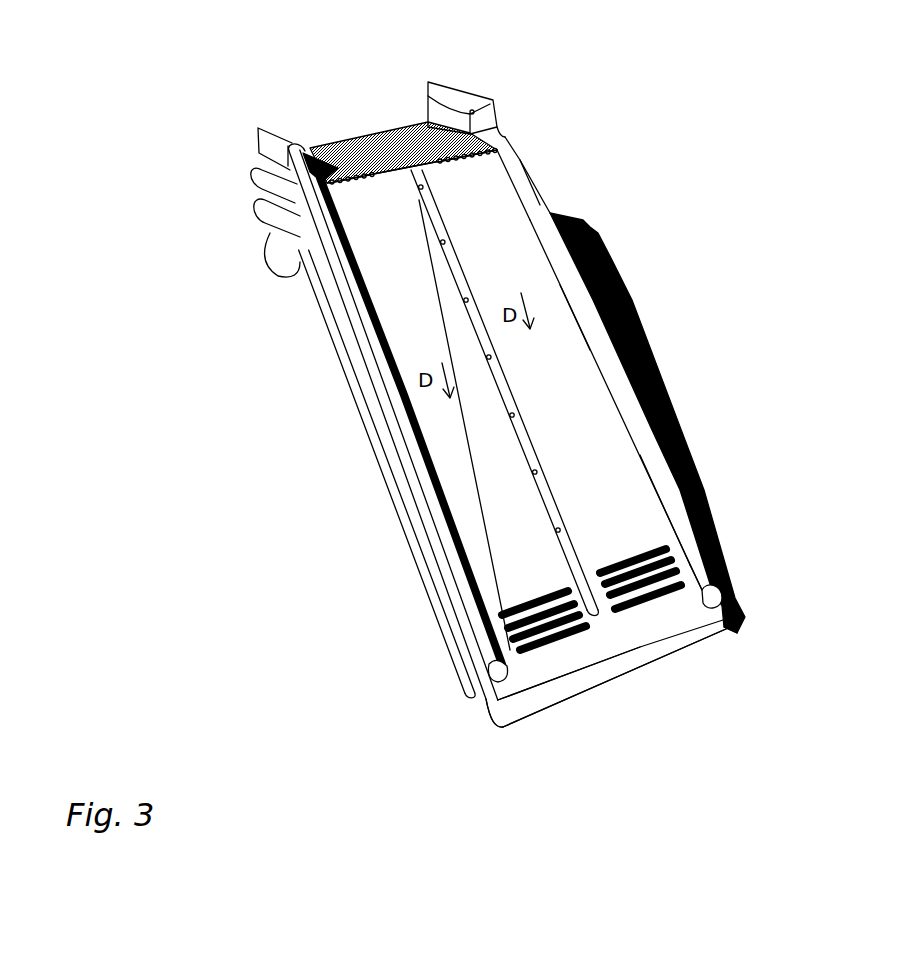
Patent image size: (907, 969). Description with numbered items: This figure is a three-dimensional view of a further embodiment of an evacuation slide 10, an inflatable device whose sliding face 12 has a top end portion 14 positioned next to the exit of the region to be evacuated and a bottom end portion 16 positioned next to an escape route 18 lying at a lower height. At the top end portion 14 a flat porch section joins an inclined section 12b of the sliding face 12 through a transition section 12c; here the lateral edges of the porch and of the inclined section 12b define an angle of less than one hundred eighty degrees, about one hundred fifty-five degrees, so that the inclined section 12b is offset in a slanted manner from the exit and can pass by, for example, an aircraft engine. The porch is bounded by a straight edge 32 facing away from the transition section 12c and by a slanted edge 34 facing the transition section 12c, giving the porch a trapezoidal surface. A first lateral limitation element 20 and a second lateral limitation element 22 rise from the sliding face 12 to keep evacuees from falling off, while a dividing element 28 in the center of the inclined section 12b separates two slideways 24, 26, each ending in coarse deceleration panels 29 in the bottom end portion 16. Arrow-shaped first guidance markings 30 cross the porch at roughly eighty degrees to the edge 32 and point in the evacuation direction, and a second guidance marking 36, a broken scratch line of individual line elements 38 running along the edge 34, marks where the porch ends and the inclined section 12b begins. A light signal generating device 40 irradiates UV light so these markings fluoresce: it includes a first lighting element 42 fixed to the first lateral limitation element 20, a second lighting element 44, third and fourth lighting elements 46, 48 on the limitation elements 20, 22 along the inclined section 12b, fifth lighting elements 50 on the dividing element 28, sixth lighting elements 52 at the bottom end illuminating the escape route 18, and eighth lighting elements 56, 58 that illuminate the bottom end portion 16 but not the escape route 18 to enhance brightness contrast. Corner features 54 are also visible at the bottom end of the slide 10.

The evacuation slide 10 is at (741, 267).
The sliding face 12 is at (503, 113).
The inclined section 12b is at (493, 213).
The transition section 12c is at (500, 150).
The top end portion 14 is at (515, 128).
The bottom end portion 16 is at (748, 590).
The escape route 18 is at (628, 716).
The first lateral limitation element 20 is at (427, 492).
The second lateral limitation element 22 is at (653, 456).
The slideway 24 is at (497, 545).
The slideway 26 is at (632, 512).
The dividing element 28 is at (500, 377).
The deceleration panels 29 is at (525, 598).
The first guidance markings 30 is at (347, 165).
The edge 32 is at (385, 132).
The edge 34 is at (403, 172).
The second guidance marking 36 is at (357, 185).
The line elements 38 is at (455, 165).
The light signal generating device 40 is at (535, 166).
The first lighting element 42 is at (306, 142).
The second lighting element 44 is at (475, 110).
The third lighting elements 46 is at (432, 446).
The fourth lighting elements 48 is at (575, 318).
The fifth lighting elements 50 is at (548, 484).
The sixth lighting elements 52 is at (643, 678).
The rounded corners 54 is at (518, 724).
The eighth lighting elements 56 is at (512, 652).
The eighth lighting elements 58 is at (702, 593).